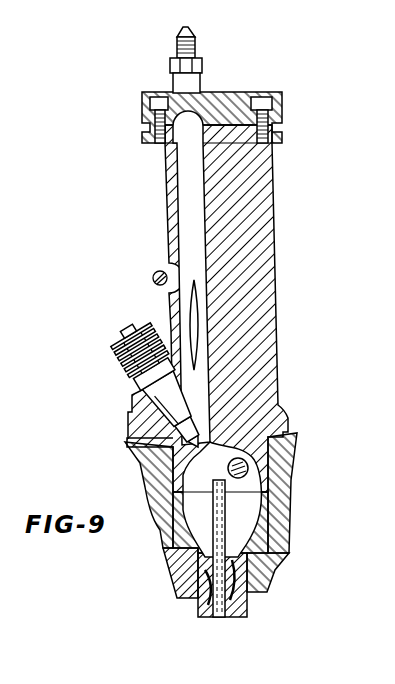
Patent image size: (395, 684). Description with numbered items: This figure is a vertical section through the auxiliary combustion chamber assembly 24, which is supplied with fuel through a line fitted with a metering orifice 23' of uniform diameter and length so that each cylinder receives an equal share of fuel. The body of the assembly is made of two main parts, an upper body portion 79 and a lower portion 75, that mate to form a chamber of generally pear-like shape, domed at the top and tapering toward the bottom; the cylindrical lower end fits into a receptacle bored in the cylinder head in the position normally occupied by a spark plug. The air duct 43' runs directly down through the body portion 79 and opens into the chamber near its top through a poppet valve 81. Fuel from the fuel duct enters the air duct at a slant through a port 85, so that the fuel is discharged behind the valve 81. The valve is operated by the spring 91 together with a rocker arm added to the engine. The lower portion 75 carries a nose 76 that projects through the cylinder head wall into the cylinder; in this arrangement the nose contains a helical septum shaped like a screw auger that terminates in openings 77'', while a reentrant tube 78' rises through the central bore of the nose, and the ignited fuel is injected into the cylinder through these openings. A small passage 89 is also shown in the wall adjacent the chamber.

The metering orifice 23' is at (206, 60).
The air duct 43' is at (162, 278).
The auxiliary combustion chamber assembly 24 is at (274, 258).
The port 85 is at (191, 300).
The spring 91 is at (124, 363).
The upper body portion 79 is at (290, 424).
The poppet valve 81 is at (189, 441).
The passage 89 is at (248, 467).
The lower portion 75 is at (264, 517).
The reentrant tube 78' is at (212, 548).
The nose 76 is at (250, 568).
The openings 77'' is at (226, 597).